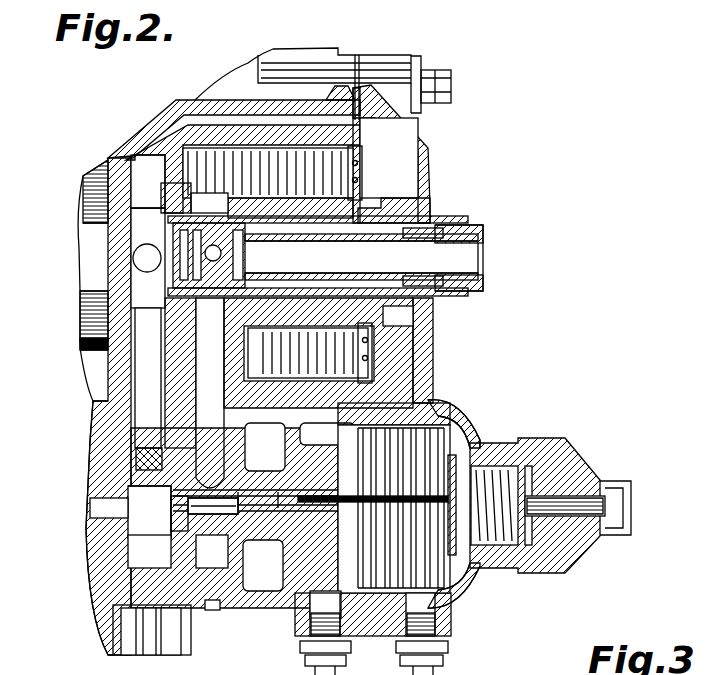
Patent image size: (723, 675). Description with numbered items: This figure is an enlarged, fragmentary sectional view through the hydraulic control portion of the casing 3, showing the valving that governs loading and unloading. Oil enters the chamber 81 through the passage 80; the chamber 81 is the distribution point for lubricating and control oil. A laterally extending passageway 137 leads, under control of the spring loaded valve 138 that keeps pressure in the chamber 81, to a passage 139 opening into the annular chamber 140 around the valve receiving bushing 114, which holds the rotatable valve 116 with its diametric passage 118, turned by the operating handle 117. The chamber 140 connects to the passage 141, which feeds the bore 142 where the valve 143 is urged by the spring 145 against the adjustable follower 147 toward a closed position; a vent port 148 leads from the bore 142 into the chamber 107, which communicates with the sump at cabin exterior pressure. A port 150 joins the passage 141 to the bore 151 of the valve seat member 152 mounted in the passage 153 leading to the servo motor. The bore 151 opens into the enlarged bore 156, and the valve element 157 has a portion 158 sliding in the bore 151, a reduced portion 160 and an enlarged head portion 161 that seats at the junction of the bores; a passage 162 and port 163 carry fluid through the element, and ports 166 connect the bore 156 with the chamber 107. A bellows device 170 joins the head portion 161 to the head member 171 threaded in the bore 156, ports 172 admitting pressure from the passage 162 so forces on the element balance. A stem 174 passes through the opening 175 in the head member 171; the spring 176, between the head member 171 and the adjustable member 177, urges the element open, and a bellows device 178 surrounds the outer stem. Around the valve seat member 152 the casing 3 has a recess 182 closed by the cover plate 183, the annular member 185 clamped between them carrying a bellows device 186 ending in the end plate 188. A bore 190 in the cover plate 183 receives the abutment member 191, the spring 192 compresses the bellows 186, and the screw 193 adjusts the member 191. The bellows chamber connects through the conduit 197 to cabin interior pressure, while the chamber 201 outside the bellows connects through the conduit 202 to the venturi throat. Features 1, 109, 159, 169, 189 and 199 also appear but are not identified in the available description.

The pump housing assembly 1 is at (426, 127).
The casing 3 is at (90, 414).
The passage 80 is at (128, 252).
The chamber 81 is at (130, 218).
The chamber 107 is at (390, 170).
The passage 109 is at (240, 420).
The valve receiving bushing 114 is at (323, 256).
The rotatable valve 116 is at (328, 226).
The operating handle 117 is at (448, 215).
The diametric passage 118 is at (215, 244).
The laterally extending passageway 137 is at (126, 148).
The spring loaded valve 138 is at (178, 175).
The passage 139 is at (140, 170).
The annular chamber 140 is at (228, 165).
The passage 141 is at (195, 314).
The bore 142 is at (240, 340).
The valve 143 is at (240, 366).
The spring 145 is at (365, 345).
The adjustable follower 147 is at (372, 360).
The vent port 148 is at (240, 355).
The port 150 is at (202, 482).
The bore 151 is at (269, 453).
The valve seat member 152 is at (265, 445).
The passage 153 is at (90, 542).
The enlarged bore 156 is at (327, 432).
The valve element 157 is at (263, 564).
The portion 158 is at (170, 540).
The port 159 is at (92, 503).
The reduced portion 160 is at (213, 551).
The enlarged head portion 161 is at (270, 574).
The passage 162 is at (175, 510).
The port 163 is at (110, 480).
The ports 166 is at (245, 600).
The sleeve 169 is at (218, 600).
The bellows device 170 is at (330, 628).
The head member 171 is at (340, 650).
The ports 172 is at (290, 600).
The stem 174 is at (322, 600).
The opening 175 is at (373, 519).
The spring 176 is at (446, 415).
The adjustable member 177 is at (447, 428).
The bellows device 178 is at (470, 562).
The recess 182 is at (318, 612).
The cover plate 183 is at (457, 430).
The annular member 185 is at (484, 363).
The bellows device 186 is at (450, 590).
The end plate 188 is at (508, 566).
The spring 189 is at (505, 445).
The bore 190 is at (495, 495).
The abutment member 191 is at (588, 443).
The spring 192 is at (527, 490).
The screw 193 is at (597, 507).
The conduit 197 is at (338, 662).
The housing 199 is at (580, 528).
The chamber 201 is at (447, 612).
The conduit 202 is at (440, 657).